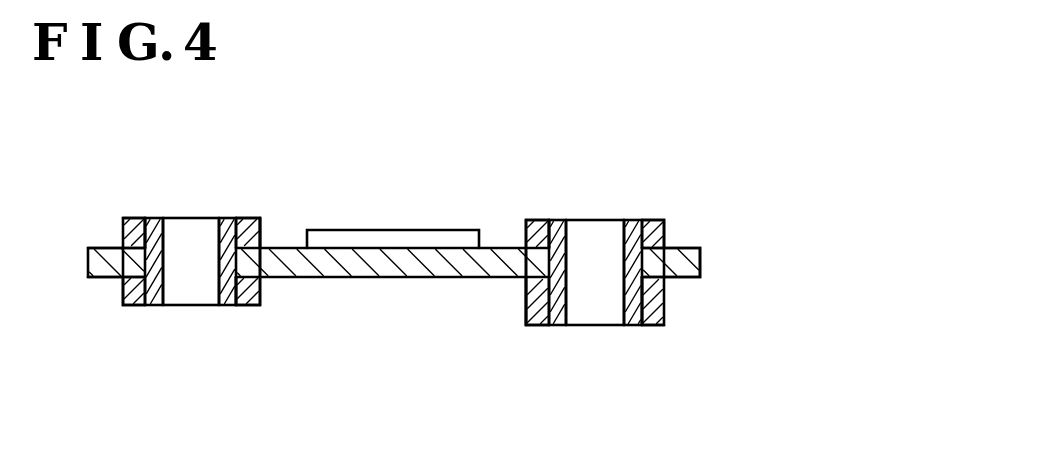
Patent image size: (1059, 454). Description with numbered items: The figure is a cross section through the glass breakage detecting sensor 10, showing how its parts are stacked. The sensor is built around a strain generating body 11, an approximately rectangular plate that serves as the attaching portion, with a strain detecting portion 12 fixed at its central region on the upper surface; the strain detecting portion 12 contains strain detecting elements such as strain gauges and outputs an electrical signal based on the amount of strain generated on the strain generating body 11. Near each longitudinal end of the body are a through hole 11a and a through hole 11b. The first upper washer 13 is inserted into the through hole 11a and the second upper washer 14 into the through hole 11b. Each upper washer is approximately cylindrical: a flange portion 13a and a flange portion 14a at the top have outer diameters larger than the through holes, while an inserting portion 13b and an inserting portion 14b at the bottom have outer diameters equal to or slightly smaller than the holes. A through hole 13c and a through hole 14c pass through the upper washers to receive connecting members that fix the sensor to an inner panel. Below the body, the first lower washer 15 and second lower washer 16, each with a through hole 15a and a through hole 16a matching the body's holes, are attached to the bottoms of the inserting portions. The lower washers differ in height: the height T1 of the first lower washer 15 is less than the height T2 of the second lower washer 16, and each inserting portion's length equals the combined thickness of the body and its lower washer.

The glass breakage detecting sensor 10 is at (723, 135).
The strain generating body 11 is at (403, 278).
The through hole 11a is at (140, 227).
The through hole 11b is at (645, 227).
The strain detecting portion 12 is at (383, 230).
The first upper washer 13 is at (122, 230).
The flange portion 13a is at (259, 222).
The inserting portion 13b is at (153, 307).
The through hole 13c is at (190, 228).
The second upper washer 14 is at (665, 228).
The flange portion 14a is at (543, 220).
The inserting portion 14b is at (633, 318).
The through hole 14c is at (583, 220).
The first lower washer 15 is at (253, 292).
The through hole 15a is at (230, 307).
The second lower washer 16 is at (533, 312).
The through hole 16a is at (560, 325).
The height of first lower washer T1 is at (108, 305).
The height of second lower washer T2 is at (707, 278).